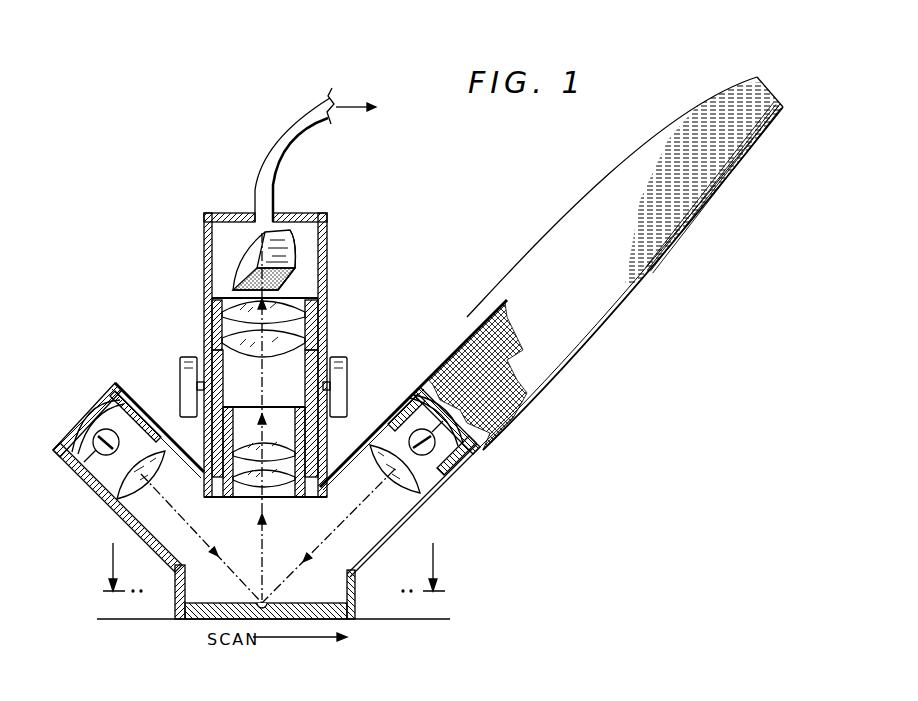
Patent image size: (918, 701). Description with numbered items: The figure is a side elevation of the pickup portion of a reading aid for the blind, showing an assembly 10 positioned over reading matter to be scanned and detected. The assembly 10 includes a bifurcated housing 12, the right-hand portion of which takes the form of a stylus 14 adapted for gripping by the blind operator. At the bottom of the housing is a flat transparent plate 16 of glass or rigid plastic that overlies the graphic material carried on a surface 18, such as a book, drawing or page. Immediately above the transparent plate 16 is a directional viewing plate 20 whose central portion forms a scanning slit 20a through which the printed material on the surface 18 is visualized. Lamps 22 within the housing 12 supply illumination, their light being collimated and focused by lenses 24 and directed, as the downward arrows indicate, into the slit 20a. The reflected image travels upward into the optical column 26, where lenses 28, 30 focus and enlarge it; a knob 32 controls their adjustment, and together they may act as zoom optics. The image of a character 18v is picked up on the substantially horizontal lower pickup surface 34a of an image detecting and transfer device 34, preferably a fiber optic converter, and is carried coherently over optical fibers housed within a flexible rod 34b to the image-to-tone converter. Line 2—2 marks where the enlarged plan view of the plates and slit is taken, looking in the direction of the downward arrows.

The assembly 10 is at (122, 291).
The bifurcated housing 12 is at (496, 297).
The stylus 14 is at (655, 266).
The flat transparent plate 16 is at (197, 613).
The surface 18 is at (388, 620).
The character 18v is at (295, 272).
The directional viewing plate 20 is at (298, 605).
The scanning slit 20a is at (264, 600).
The lamps 22 is at (84, 463).
The lenses 24 is at (107, 497).
The optical column 26 is at (333, 294).
The lens 28 is at (305, 345).
The lens 30 is at (295, 470).
The knob 32 is at (351, 378).
The image detecting and transfer device 34 is at (250, 256).
The pickup surface 34a is at (233, 286).
The flexible rod 34b is at (288, 128).
The line 2— 2 is at (274, 579).